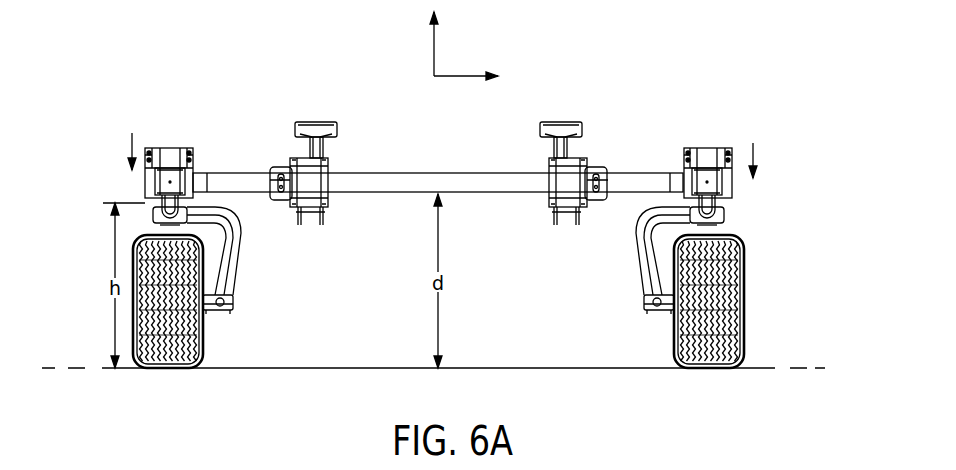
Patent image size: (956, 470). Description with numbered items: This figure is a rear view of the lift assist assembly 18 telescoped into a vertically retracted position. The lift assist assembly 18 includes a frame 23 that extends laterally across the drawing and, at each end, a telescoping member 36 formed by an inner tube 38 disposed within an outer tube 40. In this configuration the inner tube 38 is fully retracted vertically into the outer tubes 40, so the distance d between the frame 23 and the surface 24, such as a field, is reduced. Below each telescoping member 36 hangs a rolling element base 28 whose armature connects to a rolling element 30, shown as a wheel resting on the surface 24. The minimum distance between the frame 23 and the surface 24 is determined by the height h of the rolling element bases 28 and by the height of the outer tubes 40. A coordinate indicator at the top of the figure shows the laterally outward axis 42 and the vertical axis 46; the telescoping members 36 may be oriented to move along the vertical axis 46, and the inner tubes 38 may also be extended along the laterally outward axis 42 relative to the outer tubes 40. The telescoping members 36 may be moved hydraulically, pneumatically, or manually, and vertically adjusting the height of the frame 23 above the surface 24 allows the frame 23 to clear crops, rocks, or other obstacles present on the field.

The lift assist assembly 18 is at (405, 158).
The frame 23 is at (365, 173).
The surface 24 is at (537, 368).
The rolling element base 28 is at (100, 258).
The rolling element 30 is at (203, 332).
The telescoping member 36 is at (212, 160).
The inner tube 38 is at (157, 198).
The outer tube 40 is at (170, 175).
The laterally outward axis 42 is at (462, 76).
The vertical axis 46 is at (433, 50).